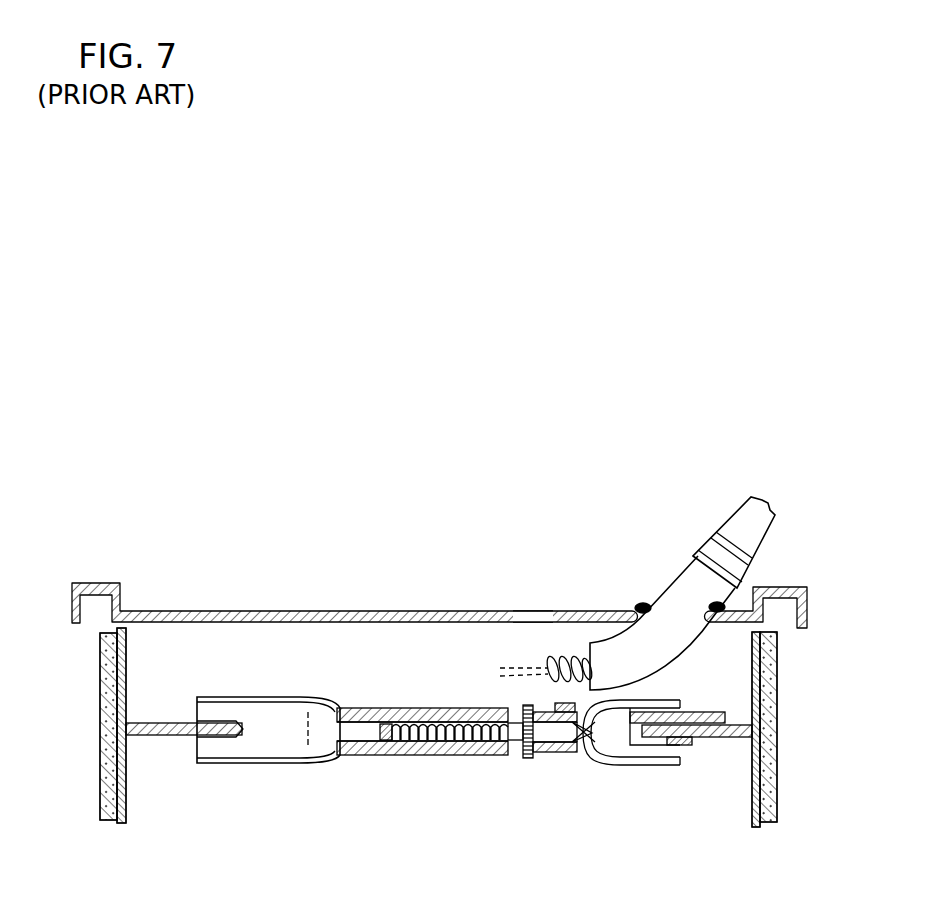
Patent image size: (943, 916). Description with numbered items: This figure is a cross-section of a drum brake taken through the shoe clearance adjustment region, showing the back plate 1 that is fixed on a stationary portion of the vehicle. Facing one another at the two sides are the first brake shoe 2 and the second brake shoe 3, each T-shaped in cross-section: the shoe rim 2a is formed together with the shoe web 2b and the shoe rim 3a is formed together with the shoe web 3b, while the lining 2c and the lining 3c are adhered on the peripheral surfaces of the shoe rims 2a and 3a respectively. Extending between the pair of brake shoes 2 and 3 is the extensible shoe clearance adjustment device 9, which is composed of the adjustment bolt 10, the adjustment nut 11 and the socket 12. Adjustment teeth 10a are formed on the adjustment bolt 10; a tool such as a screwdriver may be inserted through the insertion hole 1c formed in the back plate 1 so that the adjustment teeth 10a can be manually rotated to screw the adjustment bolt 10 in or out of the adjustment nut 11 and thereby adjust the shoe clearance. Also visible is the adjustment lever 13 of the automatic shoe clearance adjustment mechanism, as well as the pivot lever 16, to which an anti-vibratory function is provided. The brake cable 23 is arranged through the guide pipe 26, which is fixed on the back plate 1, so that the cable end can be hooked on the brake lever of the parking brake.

The back plate 1 is at (447, 611).
The insertion hole 1c is at (522, 611).
The first brake shoe 2 is at (778, 700).
The shoe rim 2a is at (757, 828).
The shoe web 2b is at (727, 728).
The lining 2c is at (770, 823).
The second brake shoe 3 is at (100, 700).
The shoe rim 3a is at (122, 825).
The shoe web 3b is at (163, 738).
The lining 3c is at (108, 823).
The shoe clearance adjustment device 9 is at (448, 756).
The adjustment bolt 10 is at (480, 757).
The adjustment teeth 10a is at (530, 760).
The adjustment nut 11 is at (363, 758).
The socket 12 is at (568, 757).
The adjustment lever 13 is at (690, 767).
The pivot lever 16 is at (712, 724).
The brake cable 23 is at (563, 642).
The guide pipe 26 is at (680, 570).